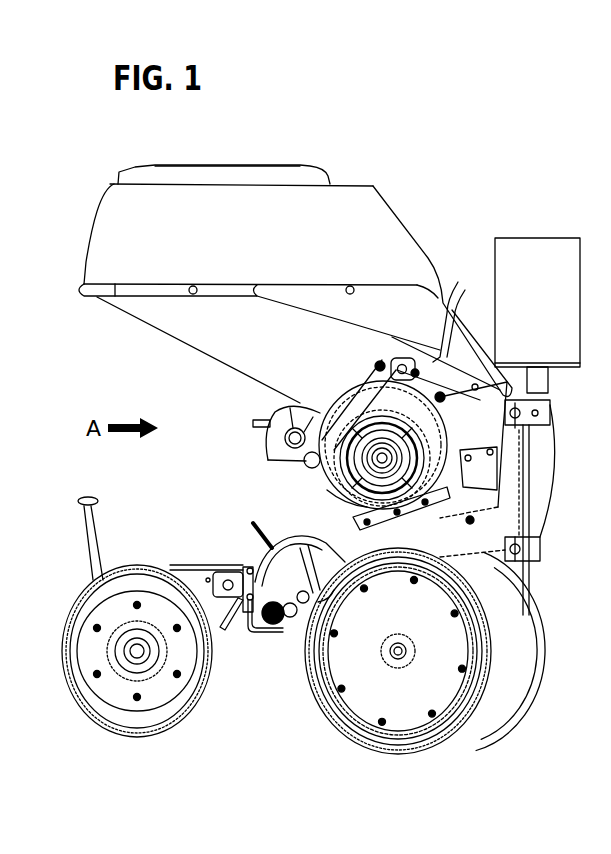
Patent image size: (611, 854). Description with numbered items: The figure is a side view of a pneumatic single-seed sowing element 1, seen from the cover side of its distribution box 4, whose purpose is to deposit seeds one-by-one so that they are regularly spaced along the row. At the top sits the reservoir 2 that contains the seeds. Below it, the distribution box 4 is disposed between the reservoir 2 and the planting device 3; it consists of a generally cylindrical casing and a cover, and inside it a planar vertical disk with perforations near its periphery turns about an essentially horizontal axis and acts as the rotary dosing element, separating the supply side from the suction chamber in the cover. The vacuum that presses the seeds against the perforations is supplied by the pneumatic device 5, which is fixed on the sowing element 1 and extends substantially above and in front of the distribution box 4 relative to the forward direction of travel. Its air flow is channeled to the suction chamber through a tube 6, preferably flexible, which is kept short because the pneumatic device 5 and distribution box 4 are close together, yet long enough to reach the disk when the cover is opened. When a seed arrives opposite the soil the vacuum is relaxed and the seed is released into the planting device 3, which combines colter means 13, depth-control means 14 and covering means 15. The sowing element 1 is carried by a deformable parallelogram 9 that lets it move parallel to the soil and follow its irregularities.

The sowing element 1 is at (400, 196).
The reservoir 2 is at (203, 183).
The planting device 3 is at (482, 717).
The distribution box 4 is at (314, 489).
The pneumatic device 5 is at (527, 238).
The tube 6 is at (458, 282).
The deformable parallelogram 9 is at (547, 559).
The colter means 13 is at (533, 693).
The depth-control means 14 is at (337, 724).
The covering means 15 is at (147, 730).